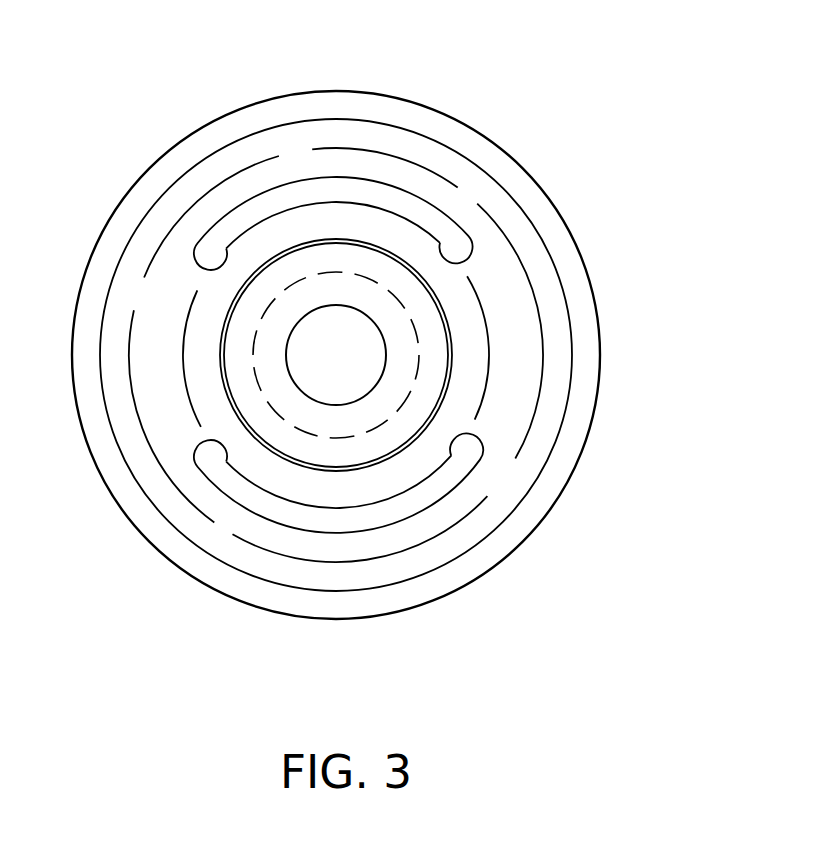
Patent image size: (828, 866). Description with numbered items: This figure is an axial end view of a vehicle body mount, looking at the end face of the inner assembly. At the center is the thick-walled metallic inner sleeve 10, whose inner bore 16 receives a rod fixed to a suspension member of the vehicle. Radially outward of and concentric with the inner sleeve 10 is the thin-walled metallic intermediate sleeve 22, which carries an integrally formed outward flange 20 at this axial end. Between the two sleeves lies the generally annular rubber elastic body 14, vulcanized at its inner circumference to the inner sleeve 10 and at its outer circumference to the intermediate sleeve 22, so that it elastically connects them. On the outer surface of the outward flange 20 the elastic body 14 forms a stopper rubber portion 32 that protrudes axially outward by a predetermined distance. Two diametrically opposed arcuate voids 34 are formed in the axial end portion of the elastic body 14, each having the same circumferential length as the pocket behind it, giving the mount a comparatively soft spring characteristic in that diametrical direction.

The inner sleeve 10 is at (305, 412).
The elastic body 14 is at (193, 338).
The inner bore 16 is at (308, 315).
The outward flange 20 is at (513, 532).
The intermediate sleeve 22 is at (603, 345).
The stopper rubber portion 32 is at (427, 557).
The arcuate voids 34 is at (367, 190).